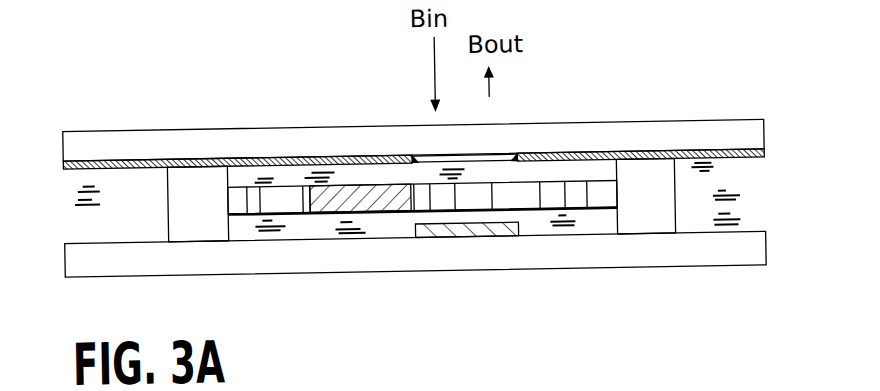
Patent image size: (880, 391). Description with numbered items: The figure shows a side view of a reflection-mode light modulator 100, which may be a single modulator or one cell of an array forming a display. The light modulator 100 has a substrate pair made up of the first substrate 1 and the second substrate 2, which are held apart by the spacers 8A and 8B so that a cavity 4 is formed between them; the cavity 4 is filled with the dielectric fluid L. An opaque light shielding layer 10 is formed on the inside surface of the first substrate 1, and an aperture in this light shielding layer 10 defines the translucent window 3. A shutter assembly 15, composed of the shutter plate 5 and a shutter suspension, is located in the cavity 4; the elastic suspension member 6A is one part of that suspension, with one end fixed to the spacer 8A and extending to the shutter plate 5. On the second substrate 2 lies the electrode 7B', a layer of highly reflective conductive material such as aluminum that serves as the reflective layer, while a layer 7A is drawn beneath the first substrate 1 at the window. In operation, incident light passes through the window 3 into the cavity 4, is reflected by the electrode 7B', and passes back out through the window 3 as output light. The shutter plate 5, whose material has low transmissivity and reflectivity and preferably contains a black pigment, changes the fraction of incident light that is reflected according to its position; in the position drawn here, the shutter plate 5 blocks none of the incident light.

The first substrate 1 is at (103, 142).
The second substrate 2 is at (103, 260).
The window 3 is at (419, 137).
The cavity 4 is at (277, 231).
The shutter plate 5 is at (367, 182).
The elastic suspension member 6A is at (283, 182).
The upper electrode 7A is at (500, 156).
The electrode 7B' is at (467, 273).
The spacer 8A is at (187, 189).
The spacer 8B is at (645, 222).
The light shielding layer 10 is at (77, 164).
The shutter assembly 15 is at (598, 195).
The light modulator 100 is at (692, 105).
The dielectric fluid L is at (322, 226).